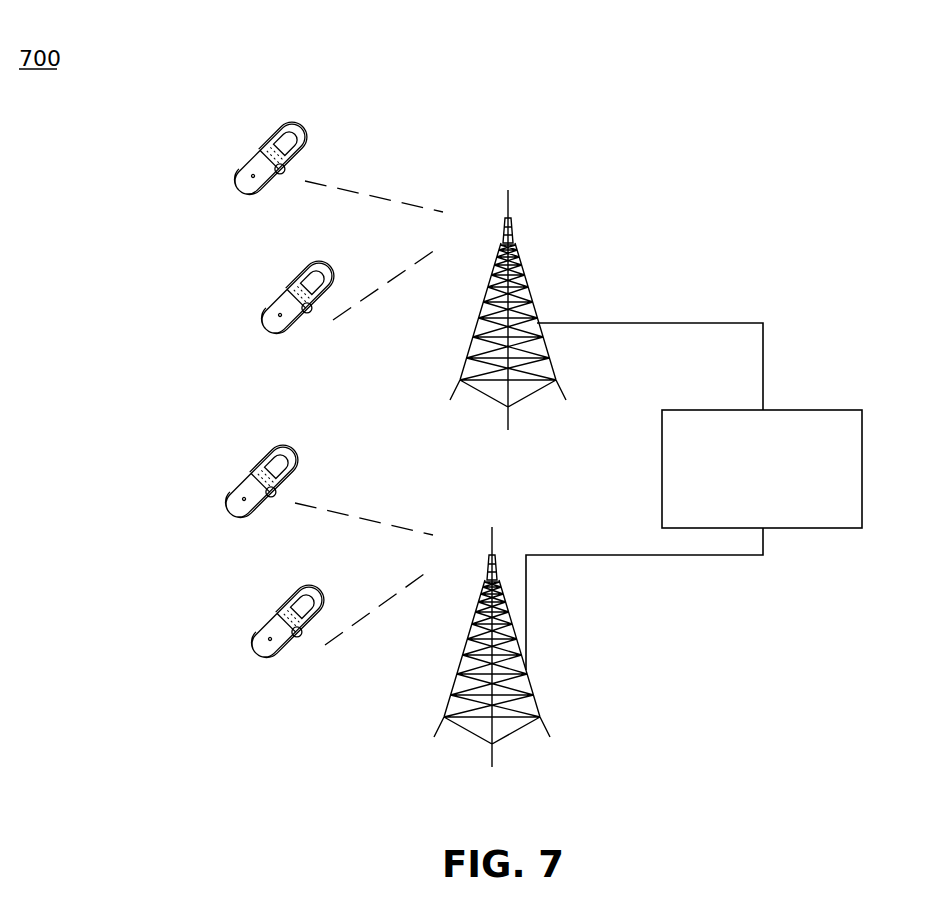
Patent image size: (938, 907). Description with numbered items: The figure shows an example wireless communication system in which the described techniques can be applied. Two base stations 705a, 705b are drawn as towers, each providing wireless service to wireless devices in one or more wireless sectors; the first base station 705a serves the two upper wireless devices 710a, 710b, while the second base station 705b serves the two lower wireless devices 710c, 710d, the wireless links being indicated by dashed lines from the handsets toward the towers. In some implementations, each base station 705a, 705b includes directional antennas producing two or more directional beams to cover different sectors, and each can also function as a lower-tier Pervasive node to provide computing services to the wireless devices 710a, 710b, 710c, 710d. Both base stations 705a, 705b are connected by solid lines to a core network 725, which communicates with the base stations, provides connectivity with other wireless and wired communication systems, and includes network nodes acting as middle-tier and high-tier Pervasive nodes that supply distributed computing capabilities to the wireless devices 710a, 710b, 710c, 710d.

The base station 705a is at (519, 270).
The base station 705b is at (500, 553).
The wireless device 710a is at (264, 137).
The wireless device 710b is at (295, 275).
The wireless device 710c is at (260, 456).
The wireless device 710d is at (287, 597).
The core network 725 is at (680, 409).